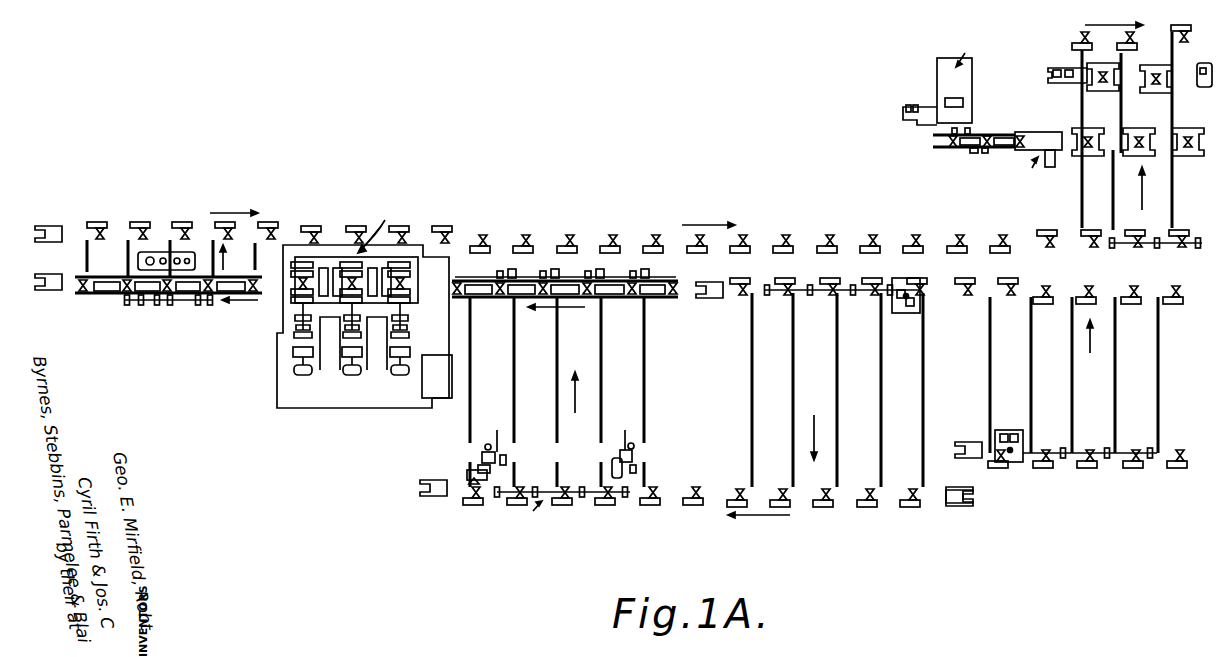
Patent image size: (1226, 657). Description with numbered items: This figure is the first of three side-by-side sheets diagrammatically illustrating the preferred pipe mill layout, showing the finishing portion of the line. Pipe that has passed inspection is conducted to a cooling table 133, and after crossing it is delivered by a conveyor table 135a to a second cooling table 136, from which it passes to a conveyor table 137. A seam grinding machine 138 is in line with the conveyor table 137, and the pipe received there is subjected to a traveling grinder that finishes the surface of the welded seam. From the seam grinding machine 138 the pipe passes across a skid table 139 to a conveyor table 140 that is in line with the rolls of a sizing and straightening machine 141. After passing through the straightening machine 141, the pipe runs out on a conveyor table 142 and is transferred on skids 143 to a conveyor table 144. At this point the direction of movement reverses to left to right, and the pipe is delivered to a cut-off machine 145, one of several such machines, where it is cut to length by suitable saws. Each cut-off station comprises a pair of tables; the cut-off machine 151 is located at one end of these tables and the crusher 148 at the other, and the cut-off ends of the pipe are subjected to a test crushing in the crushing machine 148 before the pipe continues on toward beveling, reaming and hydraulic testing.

The cooling table 133 is at (1157, 386).
The conveyor table 135a is at (975, 283).
The second cooling table 136 is at (778, 396).
The conveyor table 137 is at (807, 495).
The seam grinding machine 138 is at (620, 497).
The skid table 139 is at (647, 373).
The conveyor table 140 is at (660, 292).
The sizing and straightening machine 141 is at (302, 302).
The conveyor table 142 is at (142, 284).
The skids 143 is at (90, 250).
The conveyor table 144 is at (282, 226).
The cut-off machine 145 is at (1210, 205).
The crushing machine 148 is at (965, 90).
The cut-off machine 151 is at (1042, 126).